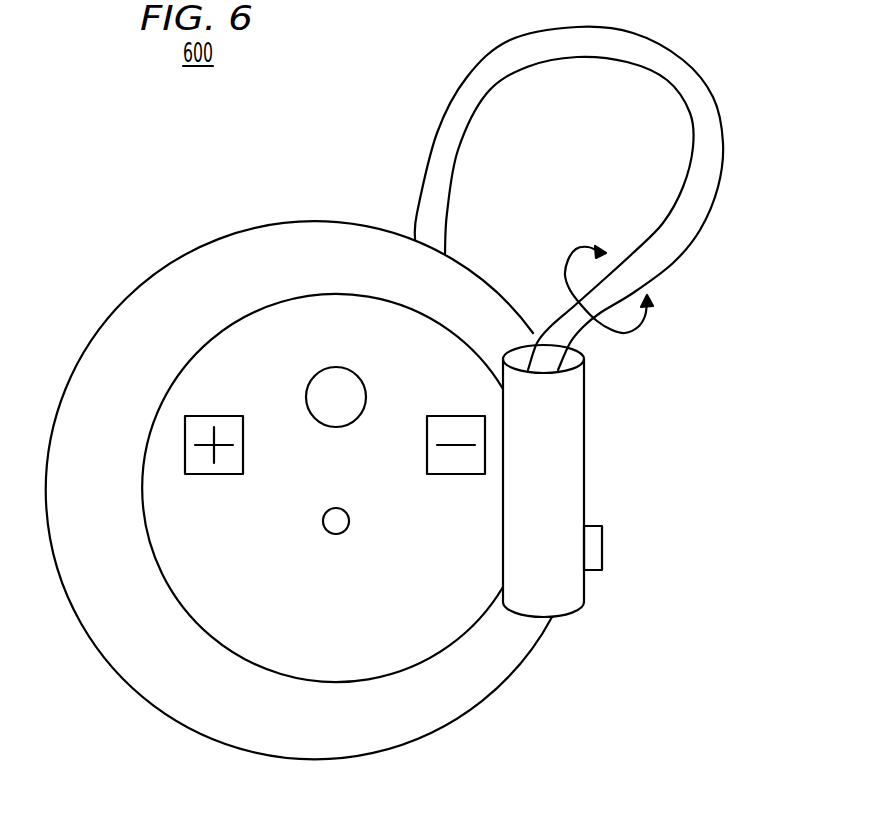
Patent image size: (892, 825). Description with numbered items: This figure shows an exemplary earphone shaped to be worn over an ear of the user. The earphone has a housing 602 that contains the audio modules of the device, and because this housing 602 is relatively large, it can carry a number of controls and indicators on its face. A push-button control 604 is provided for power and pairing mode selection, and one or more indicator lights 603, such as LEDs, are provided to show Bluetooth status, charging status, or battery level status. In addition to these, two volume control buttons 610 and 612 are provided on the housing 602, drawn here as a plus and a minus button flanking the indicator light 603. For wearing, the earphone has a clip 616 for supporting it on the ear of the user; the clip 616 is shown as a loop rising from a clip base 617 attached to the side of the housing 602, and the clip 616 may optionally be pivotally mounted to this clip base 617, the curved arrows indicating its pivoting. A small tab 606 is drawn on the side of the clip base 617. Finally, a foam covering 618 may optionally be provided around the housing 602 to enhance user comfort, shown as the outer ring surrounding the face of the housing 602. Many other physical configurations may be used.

The housing 602 is at (210, 637).
The indicator lights 603 is at (326, 530).
The push-button control 604 is at (310, 383).
The latch tab 606 is at (602, 547).
The volume control button 610 is at (214, 474).
The volume control button 612 is at (457, 474).
The clip 616 is at (680, 58).
The clip base 617 is at (584, 437).
The foam covering 618 is at (107, 662).